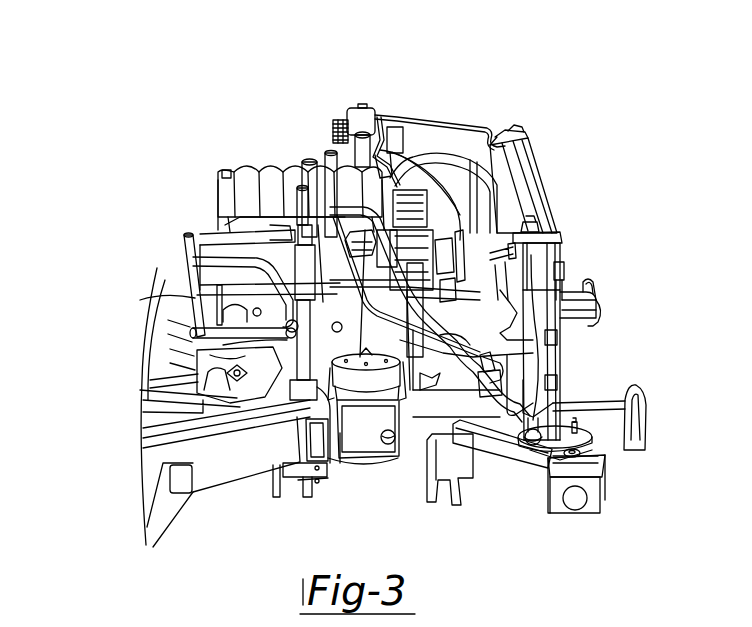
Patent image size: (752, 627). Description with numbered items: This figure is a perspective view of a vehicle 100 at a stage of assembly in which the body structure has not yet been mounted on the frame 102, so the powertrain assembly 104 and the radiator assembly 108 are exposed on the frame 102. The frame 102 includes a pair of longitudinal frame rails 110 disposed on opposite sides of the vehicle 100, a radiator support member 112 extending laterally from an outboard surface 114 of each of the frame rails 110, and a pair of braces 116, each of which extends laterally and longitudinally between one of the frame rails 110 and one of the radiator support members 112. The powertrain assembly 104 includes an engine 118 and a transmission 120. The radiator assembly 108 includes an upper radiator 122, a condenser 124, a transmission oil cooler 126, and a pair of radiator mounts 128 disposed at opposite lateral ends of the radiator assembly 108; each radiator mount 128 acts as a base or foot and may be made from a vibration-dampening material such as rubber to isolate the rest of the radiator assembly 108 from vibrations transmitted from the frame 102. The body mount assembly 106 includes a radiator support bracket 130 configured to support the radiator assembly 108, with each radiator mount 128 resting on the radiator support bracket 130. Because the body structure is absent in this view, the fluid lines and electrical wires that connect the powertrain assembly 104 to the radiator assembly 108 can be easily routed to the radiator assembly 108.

The vehicle 100 is at (586, 56).
The frame 102 is at (406, 491).
The powertrain assembly 104 is at (108, 142).
The body mount assembly 106 is at (596, 448).
The radiator assembly 108 is at (545, 158).
The frame rails 110 is at (588, 320).
The radiator support member 112 is at (605, 487).
The outboard surface 114 is at (410, 462).
The braces 116 is at (533, 482).
The engine 118 is at (251, 160).
The transmission 120 is at (165, 278).
The upper radiator 122 is at (560, 290).
The condenser 124 is at (560, 270).
The transmission oil cooler 126 is at (560, 233).
The radiator mounts 128 is at (553, 437).
The radiator support bracket 130 is at (575, 435).